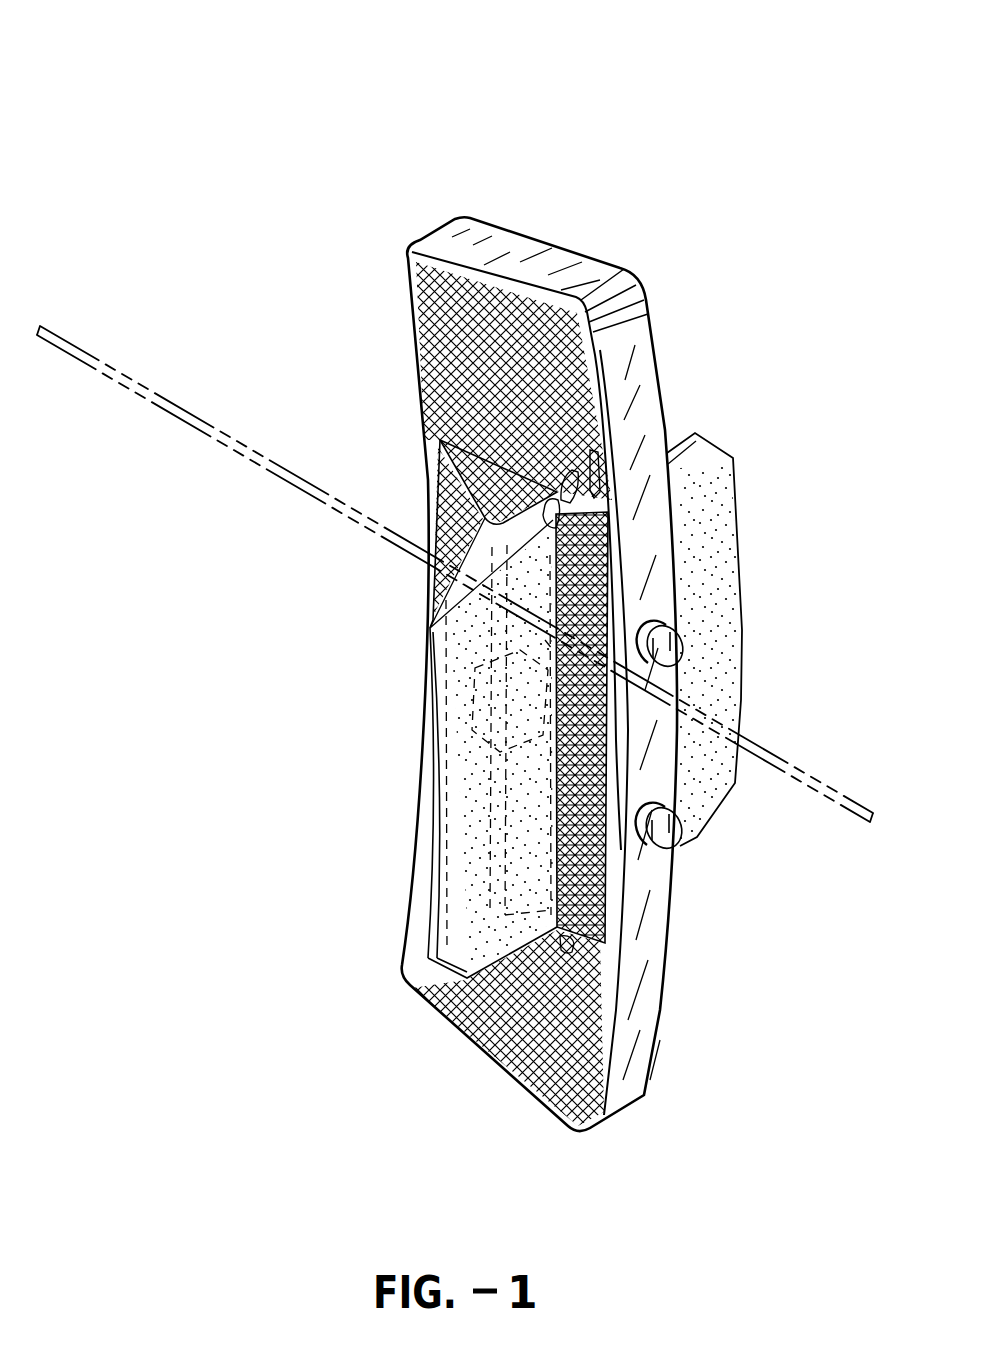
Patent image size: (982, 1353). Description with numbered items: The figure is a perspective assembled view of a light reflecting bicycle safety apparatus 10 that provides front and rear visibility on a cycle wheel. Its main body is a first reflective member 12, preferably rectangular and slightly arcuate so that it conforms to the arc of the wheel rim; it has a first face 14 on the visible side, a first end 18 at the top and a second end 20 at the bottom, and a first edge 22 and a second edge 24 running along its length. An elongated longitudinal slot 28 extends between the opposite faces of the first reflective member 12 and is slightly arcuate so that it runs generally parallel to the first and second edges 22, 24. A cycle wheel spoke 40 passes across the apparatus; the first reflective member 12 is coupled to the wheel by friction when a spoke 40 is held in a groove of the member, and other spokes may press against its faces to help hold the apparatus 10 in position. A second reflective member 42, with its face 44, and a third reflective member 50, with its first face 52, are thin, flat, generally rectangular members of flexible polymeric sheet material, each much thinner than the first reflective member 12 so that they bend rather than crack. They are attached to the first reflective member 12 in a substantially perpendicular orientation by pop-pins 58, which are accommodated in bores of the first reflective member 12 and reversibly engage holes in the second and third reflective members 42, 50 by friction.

The light reflecting apparatus 10 is at (282, 90).
The first reflective member 12 is at (437, 235).
The first face 14 is at (440, 352).
The first end 18 is at (534, 258).
The second end 20 is at (500, 1065).
The first edge 22 is at (637, 1063).
The second edge 24 is at (418, 885).
The elongated longitudinal slot 28 is at (590, 470).
The cycle wheel spoke 40 is at (168, 392).
The second reflective member 42 is at (447, 613).
The face 44 is at (440, 947).
The third reflective member 50 is at (753, 620).
The first face 52 is at (727, 567).
The pop-pins 58 is at (667, 655).